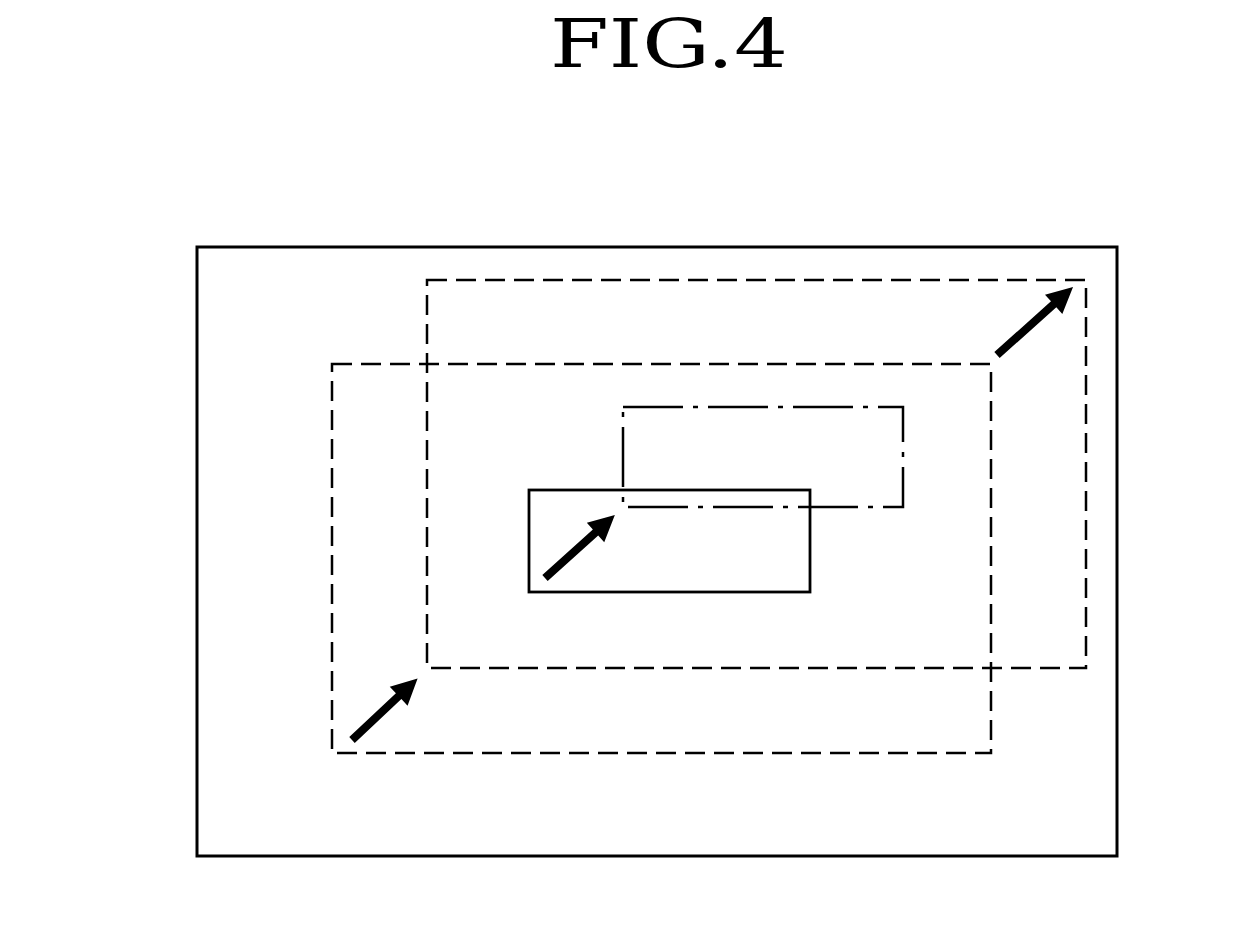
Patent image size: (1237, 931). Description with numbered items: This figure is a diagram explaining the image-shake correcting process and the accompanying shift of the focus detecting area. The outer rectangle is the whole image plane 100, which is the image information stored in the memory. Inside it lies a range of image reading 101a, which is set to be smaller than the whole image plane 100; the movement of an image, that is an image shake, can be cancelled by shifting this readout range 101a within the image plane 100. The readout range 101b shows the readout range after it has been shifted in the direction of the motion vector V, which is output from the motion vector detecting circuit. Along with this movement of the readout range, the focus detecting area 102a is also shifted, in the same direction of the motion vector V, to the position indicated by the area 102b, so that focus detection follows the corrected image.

The whole image plane 100 is at (1119, 548).
The range of image reading 101a is at (900, 753).
The shifted readout range 101b is at (1057, 667).
The focus detecting area 102a is at (812, 547).
The shifted focus detecting area 102b is at (903, 463).
The motion vector V is at (1020, 328).